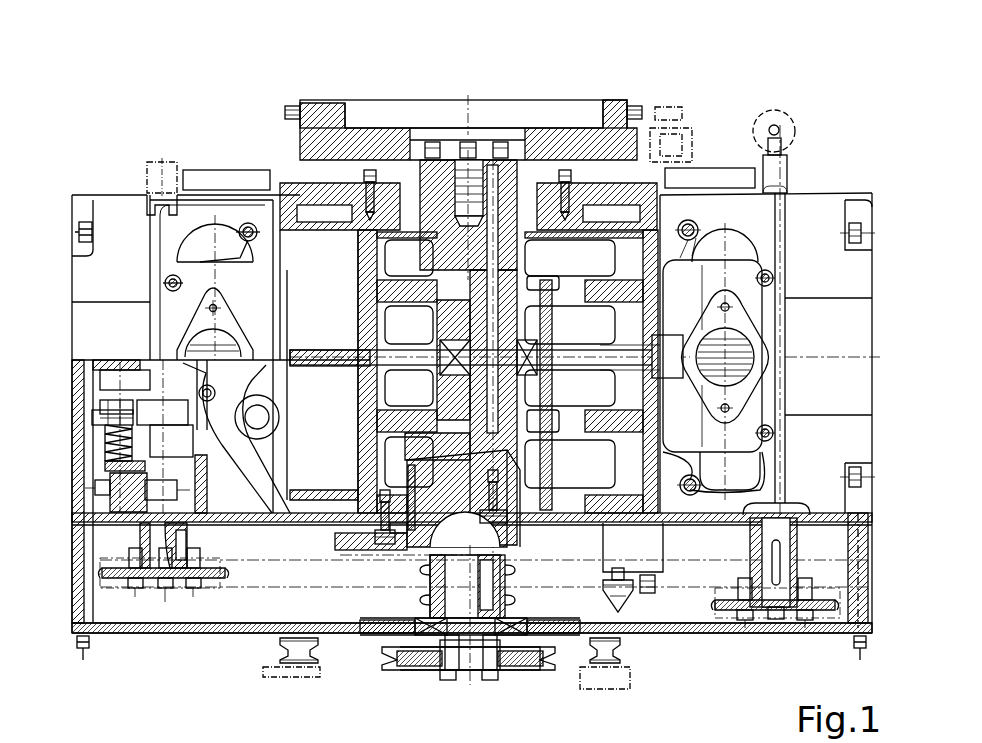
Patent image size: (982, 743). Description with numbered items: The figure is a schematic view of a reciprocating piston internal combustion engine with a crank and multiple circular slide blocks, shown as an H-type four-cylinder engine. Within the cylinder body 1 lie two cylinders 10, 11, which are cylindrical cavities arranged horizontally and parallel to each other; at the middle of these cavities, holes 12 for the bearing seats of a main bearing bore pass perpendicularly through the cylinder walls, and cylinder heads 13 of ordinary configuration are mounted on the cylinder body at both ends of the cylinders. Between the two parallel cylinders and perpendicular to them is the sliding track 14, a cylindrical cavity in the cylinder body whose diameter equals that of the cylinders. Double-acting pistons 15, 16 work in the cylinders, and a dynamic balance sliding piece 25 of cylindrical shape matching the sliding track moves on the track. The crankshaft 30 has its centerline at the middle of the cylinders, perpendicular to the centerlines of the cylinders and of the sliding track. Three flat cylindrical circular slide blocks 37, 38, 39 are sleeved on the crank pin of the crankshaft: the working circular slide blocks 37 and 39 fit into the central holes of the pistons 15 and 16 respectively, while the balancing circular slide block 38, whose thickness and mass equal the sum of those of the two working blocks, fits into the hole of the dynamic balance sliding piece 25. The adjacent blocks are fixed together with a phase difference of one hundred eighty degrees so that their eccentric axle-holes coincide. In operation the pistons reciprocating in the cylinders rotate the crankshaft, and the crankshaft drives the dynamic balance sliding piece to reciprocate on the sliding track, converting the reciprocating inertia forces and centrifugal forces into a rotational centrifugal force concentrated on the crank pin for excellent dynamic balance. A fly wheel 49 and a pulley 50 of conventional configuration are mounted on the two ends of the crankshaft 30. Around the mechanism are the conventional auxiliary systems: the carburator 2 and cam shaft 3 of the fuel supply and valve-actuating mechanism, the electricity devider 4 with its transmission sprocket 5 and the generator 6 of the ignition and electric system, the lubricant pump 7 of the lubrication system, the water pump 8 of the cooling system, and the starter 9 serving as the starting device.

The cylinder body 1 is at (112, 250).
The carburator 2 is at (173, 278).
The cam shaft 3 is at (138, 587).
The electricity devider 4 is at (782, 150).
The transmission sprocket 5 is at (722, 613).
The generator 6 is at (583, 680).
The lubricant pump 7 is at (167, 167).
The water pump 8 is at (278, 672).
The starter 9 is at (672, 112).
The cylinder 10 is at (297, 250).
The cylinder 11 is at (300, 455).
The holes for bearing seats 12 is at (395, 178).
The cylinder heads 13 is at (168, 240).
The sliding track 14 is at (450, 317).
The piston 15 is at (622, 257).
The piston 16 is at (657, 515).
The dynamic balance sliding piece 25 is at (372, 557).
The crankshaft 30 is at (430, 548).
The working circular slide block 37 is at (550, 440).
The balancing circular slide block 38 is at (335, 128).
The working circular slide block 39 is at (550, 310).
The fly wheel 49 is at (613, 107).
The pulley 50 is at (530, 660).